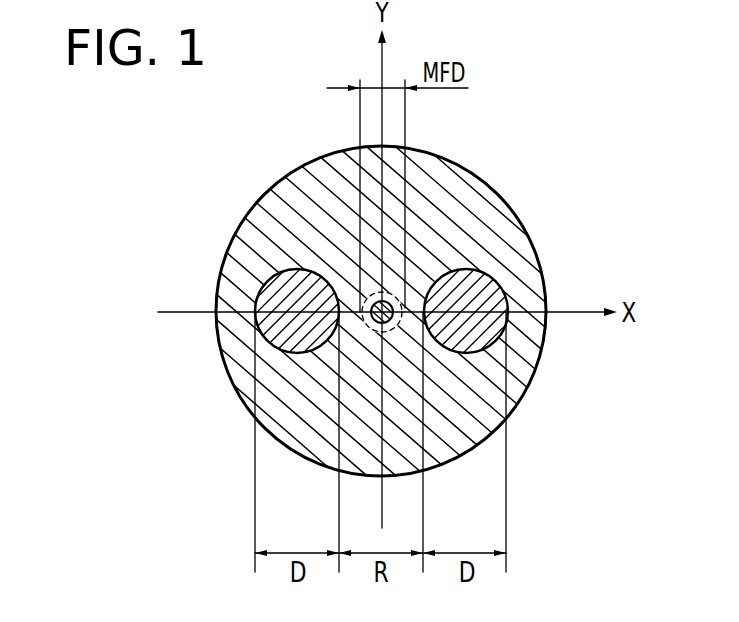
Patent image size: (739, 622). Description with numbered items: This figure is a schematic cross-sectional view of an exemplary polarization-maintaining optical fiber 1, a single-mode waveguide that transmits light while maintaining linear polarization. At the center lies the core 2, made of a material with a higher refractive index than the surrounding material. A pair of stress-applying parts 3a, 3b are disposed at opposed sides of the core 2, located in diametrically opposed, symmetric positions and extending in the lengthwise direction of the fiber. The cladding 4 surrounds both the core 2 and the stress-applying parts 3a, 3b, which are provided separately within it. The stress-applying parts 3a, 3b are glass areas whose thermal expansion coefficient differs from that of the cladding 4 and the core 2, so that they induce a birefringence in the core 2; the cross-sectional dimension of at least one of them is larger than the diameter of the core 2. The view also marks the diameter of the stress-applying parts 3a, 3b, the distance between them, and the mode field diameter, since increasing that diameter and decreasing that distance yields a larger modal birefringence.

The polarization-maintaining optical fiber 1 is at (489, 184).
The core 2 is at (402, 293).
The stress-applying part 3a is at (272, 275).
The stress-applying part 3b is at (490, 275).
The cladding 4 is at (530, 360).